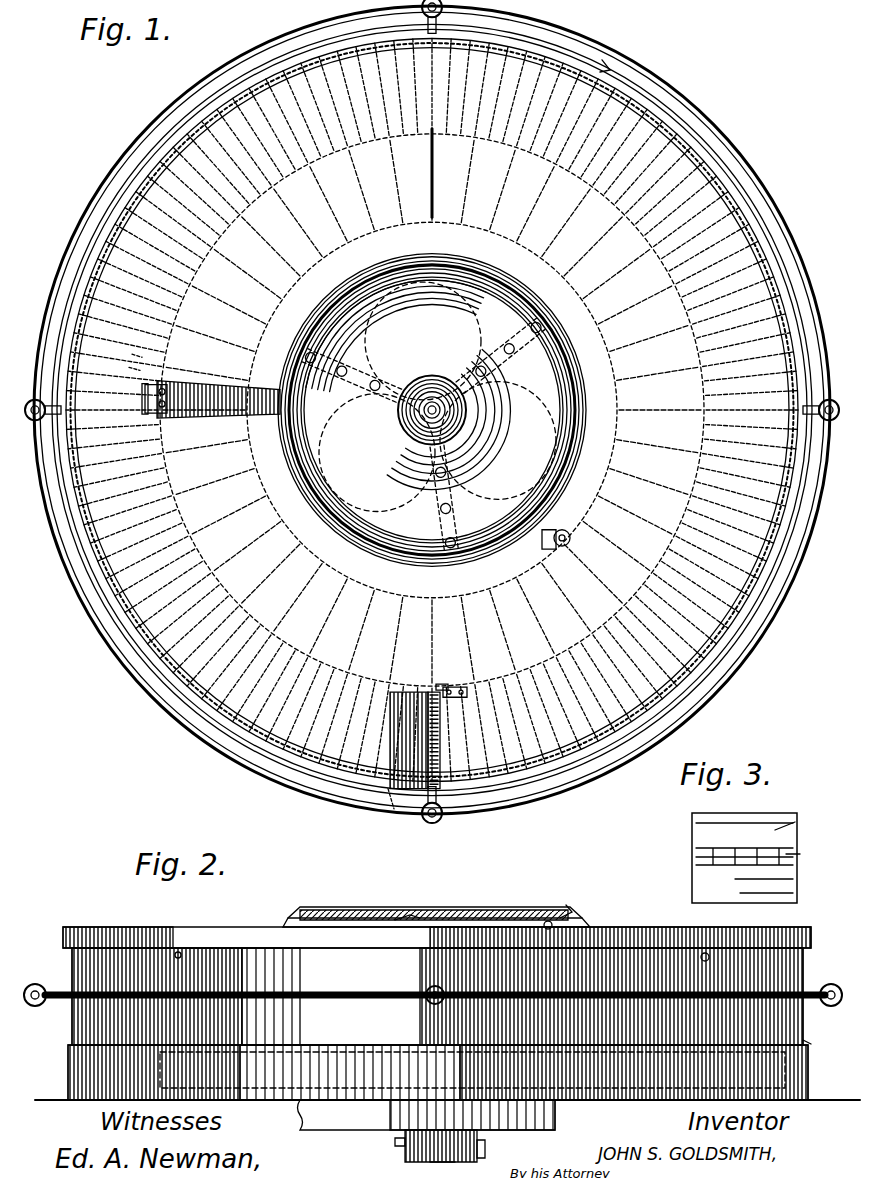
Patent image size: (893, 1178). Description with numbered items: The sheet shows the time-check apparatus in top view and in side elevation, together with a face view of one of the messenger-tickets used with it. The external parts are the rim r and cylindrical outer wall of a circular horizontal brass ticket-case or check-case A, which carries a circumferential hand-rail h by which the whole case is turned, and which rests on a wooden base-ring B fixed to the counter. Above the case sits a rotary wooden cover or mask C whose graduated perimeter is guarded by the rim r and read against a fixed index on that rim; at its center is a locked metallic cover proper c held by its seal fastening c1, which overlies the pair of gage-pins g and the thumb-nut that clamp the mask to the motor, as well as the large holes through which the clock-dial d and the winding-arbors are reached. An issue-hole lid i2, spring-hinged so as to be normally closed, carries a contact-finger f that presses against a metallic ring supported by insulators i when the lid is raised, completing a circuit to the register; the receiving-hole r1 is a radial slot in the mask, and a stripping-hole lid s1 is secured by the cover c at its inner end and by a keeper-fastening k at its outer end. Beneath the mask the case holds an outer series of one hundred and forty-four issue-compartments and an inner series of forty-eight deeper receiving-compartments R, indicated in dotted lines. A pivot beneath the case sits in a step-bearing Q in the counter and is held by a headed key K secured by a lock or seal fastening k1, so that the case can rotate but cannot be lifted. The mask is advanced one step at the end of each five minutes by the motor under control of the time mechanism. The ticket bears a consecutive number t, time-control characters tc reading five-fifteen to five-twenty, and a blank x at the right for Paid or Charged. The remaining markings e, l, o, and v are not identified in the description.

In FIG. 1, the hand-rail h is at (432, 411).
In FIG. 2, the hand-rail h is at (433, 993).
In FIG. 1, the rim r is at (432, 409).
In FIG. 2, the rim r is at (436, 937).
In FIG. 1, the receiving-hole r1 is at (440, 173).
In FIG. 1, the receiving-compartments R is at (432, 410).
In FIG. 1, the rotary cover or mask C is at (432, 410).
In FIG. 1, the central cover proper c is at (432, 410).
In FIG. 2, the central cover proper c is at (436, 907).
In FIG. 1, the clock-dial d is at (423, 434).
In FIG. 1, the catch e is at (556, 526).
In FIG. 1, the contact-finger f is at (451, 680).
In FIG. 1, the insulators i is at (395, 802).
In FIG. 1, the issue-hole lid i2 is at (415, 731).
In FIG. 2, the issue-hole lid i2 is at (398, 918).
In FIG. 1, the keeper-fastening k is at (145, 399).
In FIG. 1, the stripping-hole lid s1 is at (218, 400).
In FIG. 1, the divisions l is at (122, 359).
In FIG. 1, the mark v is at (608, 59).
In FIG. 2, the check-case A is at (66, 1025).
In FIG. 2, the base-ring B is at (447, 1072).
In FIG. 2, the gage-pins g is at (810, 1045).
In FIG. 2, the screw o is at (442, 942).
In FIG. 2, the lock or seal fastening c1 is at (562, 901).
In FIG. 2, the key K is at (427, 1131).
In FIG. 2, the step-bearing Q is at (442, 1169).
In FIG. 2, the lock or seal fastening of key k1 is at (488, 1149).
In FIG. 3, the consecutive ticket number t is at (694, 839).
In FIG. 3, the time-control characters tc is at (792, 819).
In FIG. 3, the blank x is at (800, 853).